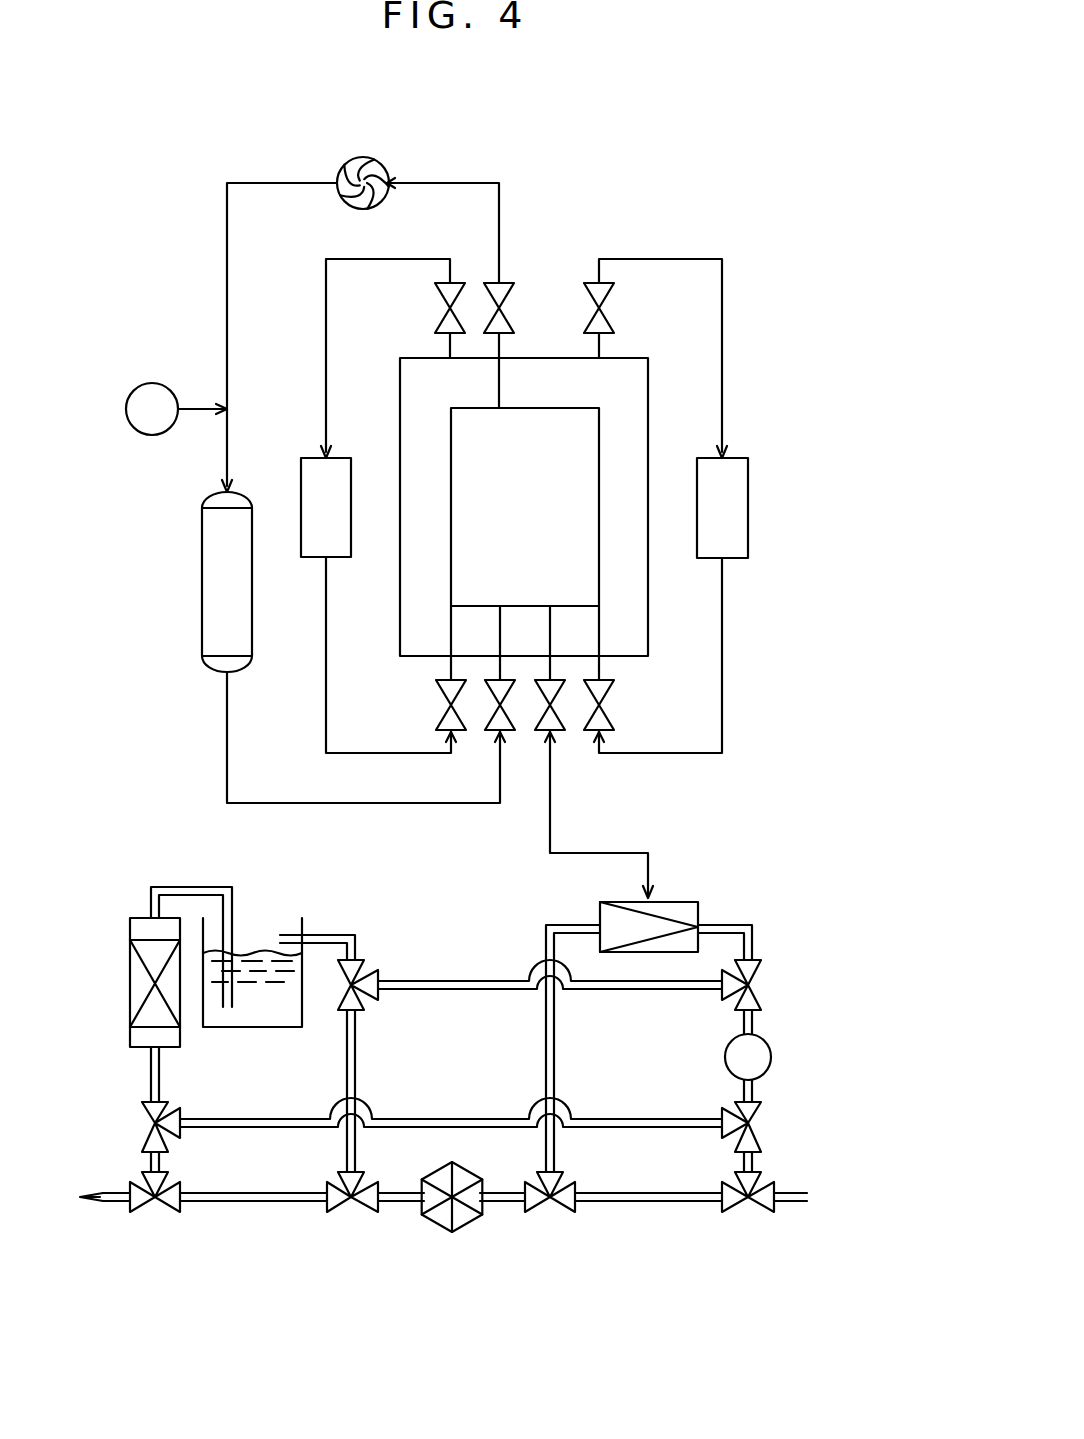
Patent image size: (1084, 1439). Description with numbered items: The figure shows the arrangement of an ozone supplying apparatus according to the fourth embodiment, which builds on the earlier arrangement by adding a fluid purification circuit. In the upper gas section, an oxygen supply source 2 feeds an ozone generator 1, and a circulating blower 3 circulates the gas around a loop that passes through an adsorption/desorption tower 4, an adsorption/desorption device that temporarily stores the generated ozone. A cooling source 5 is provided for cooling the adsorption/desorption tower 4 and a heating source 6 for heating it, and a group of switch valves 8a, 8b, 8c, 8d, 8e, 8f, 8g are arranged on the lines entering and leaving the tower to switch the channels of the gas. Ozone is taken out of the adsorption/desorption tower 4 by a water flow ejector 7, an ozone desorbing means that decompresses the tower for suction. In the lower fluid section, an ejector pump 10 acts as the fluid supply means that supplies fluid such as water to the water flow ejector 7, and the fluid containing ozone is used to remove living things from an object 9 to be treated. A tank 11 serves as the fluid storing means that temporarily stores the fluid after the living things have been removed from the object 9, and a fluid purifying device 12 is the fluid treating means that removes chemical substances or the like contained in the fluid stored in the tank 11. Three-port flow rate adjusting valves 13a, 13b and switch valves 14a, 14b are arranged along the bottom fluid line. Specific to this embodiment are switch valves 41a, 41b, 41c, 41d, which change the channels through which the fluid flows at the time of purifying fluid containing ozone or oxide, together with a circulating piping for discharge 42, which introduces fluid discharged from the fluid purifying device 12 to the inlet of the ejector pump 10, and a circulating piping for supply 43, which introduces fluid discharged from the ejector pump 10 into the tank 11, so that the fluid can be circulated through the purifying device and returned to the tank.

The ozone generator 1 is at (218, 597).
The oxygen supply source 2 is at (145, 383).
The circulating blower 3 is at (352, 168).
The adsorption/desorption tower 4 is at (648, 405).
The cooling source 5 is at (313, 483).
The heating source 6 is at (738, 518).
The water flow ejector 7 is at (680, 910).
The switch valve 8a is at (453, 290).
The switch valve 8b is at (451, 725).
The switch valve 8c is at (501, 292).
The switch valve 8d is at (498, 725).
The switch valve 8e is at (600, 292).
The switch valve 8f is at (552, 722).
The switch valve 8g is at (602, 722).
The object to be treated 9 is at (462, 1207).
The ejector pump 10 is at (771, 1055).
The tank 11 is at (305, 985).
The fluid purifying device 12 is at (137, 977).
The three-port flow rate adjusting valve 13a is at (762, 1200).
The three-port flow rate adjusting valve 13b is at (565, 1207).
The switch valve 14a is at (365, 1200).
The switch valve 14b is at (168, 1202).
The switch valve 41a is at (757, 970).
The switch valve 41b is at (752, 1140).
The switch valve 41c is at (148, 1143).
The switch valve 41d is at (380, 965).
The circulating piping for discharge 42 is at (405, 1127).
The circulating piping for supply 43 is at (492, 990).